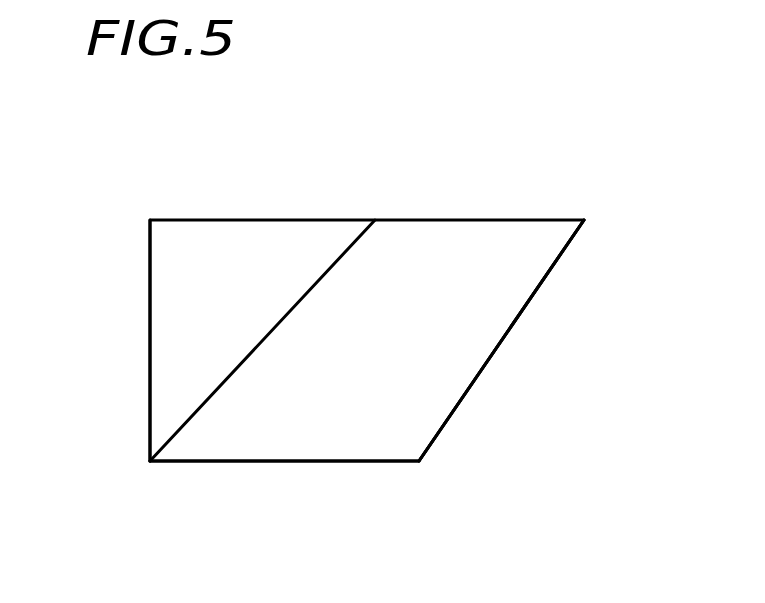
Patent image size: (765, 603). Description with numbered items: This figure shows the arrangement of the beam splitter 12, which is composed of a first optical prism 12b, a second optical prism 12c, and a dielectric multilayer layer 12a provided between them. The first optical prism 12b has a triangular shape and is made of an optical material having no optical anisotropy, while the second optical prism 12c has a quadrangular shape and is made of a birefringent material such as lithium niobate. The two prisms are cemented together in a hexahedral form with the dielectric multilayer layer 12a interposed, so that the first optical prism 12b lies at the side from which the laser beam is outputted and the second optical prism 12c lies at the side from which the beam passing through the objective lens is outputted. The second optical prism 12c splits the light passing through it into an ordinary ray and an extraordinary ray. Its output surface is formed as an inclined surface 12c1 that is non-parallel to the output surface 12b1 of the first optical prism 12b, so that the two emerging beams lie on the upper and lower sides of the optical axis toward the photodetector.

The beam splitter 12 is at (455, 188).
The dielectric multilayer layer 12a is at (177, 435).
The first optical prism 12b is at (218, 248).
The output surface of the first optical prism 12b1 is at (150, 323).
The second optical prism 12c is at (398, 431).
The inclined surface 12c1 is at (503, 343).